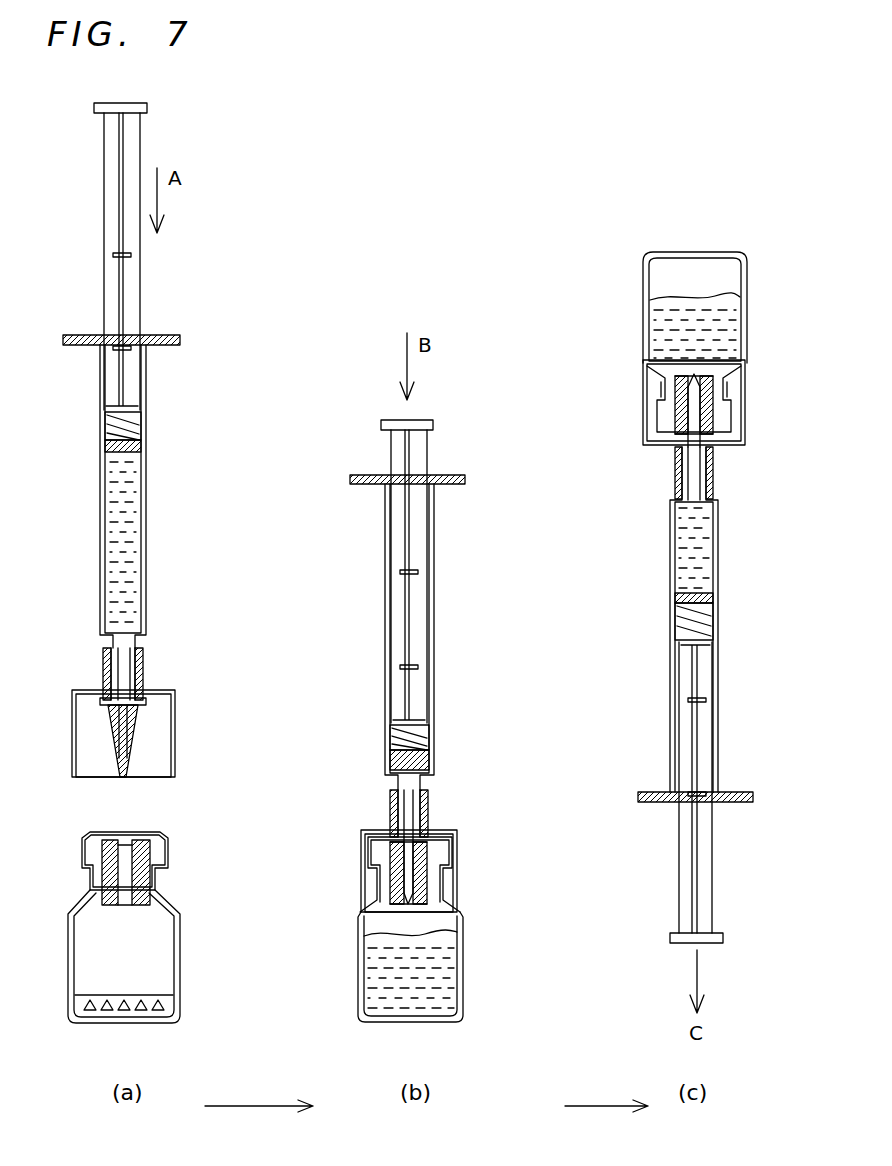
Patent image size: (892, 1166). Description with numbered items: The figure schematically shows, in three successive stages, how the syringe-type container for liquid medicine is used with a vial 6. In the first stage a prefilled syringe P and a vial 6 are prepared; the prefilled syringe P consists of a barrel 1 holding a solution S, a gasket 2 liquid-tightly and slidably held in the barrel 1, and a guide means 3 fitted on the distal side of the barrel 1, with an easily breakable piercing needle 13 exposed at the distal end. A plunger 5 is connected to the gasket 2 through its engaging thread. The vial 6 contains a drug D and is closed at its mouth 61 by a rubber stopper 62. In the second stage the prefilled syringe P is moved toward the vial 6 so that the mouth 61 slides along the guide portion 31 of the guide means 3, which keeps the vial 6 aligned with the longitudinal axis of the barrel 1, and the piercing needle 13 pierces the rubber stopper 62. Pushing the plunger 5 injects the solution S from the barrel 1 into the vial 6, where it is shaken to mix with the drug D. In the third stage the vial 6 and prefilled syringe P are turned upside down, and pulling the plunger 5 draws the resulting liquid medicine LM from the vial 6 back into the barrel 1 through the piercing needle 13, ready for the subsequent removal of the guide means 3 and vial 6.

The barrel 1 is at (100, 515).
The gasket 2 is at (104, 436).
The guide means 3 is at (188, 712).
The plunger 5 is at (140, 137).
The vial 6 is at (72, 960).
The piercing needle 13 is at (372, 882).
The guide portion 31 is at (457, 858).
The mouth 61 is at (140, 868).
The rubber stopper 62 is at (120, 836).
The solution S is at (128, 570).
The prefilled syringe P is at (167, 420).
The drug D is at (150, 1000).
The liquid medicine LM is at (418, 986).